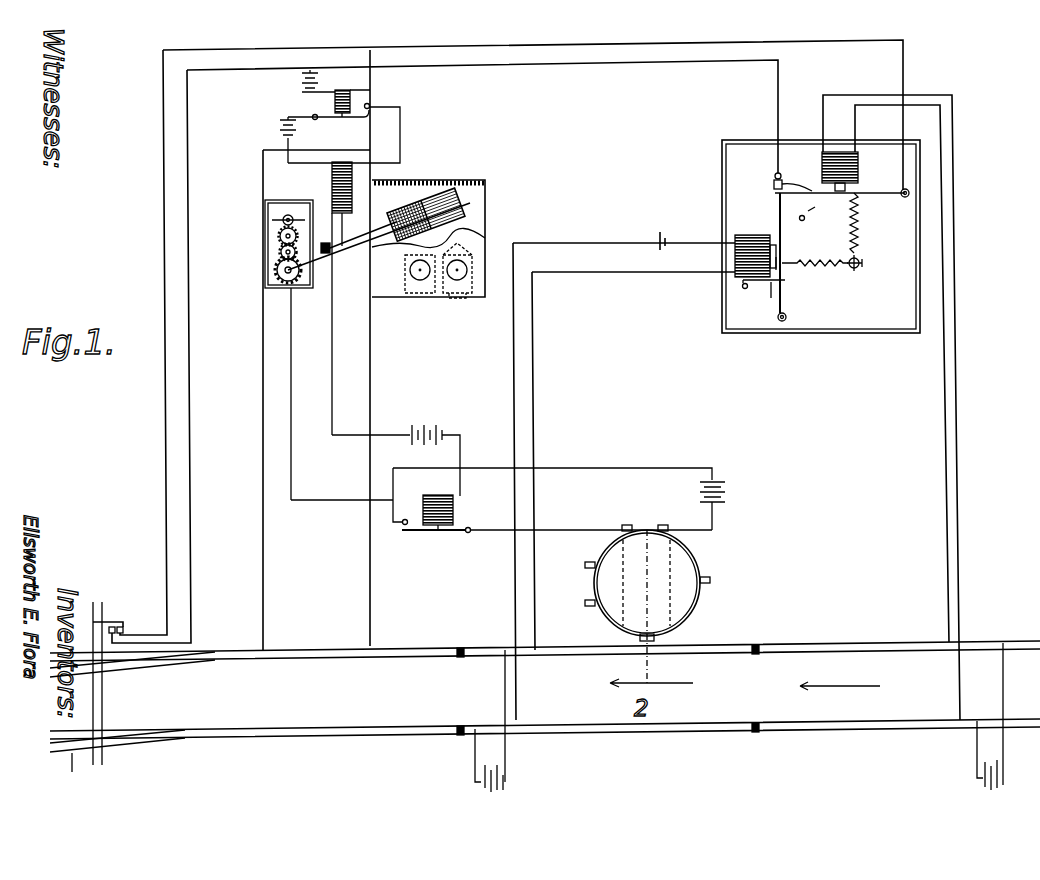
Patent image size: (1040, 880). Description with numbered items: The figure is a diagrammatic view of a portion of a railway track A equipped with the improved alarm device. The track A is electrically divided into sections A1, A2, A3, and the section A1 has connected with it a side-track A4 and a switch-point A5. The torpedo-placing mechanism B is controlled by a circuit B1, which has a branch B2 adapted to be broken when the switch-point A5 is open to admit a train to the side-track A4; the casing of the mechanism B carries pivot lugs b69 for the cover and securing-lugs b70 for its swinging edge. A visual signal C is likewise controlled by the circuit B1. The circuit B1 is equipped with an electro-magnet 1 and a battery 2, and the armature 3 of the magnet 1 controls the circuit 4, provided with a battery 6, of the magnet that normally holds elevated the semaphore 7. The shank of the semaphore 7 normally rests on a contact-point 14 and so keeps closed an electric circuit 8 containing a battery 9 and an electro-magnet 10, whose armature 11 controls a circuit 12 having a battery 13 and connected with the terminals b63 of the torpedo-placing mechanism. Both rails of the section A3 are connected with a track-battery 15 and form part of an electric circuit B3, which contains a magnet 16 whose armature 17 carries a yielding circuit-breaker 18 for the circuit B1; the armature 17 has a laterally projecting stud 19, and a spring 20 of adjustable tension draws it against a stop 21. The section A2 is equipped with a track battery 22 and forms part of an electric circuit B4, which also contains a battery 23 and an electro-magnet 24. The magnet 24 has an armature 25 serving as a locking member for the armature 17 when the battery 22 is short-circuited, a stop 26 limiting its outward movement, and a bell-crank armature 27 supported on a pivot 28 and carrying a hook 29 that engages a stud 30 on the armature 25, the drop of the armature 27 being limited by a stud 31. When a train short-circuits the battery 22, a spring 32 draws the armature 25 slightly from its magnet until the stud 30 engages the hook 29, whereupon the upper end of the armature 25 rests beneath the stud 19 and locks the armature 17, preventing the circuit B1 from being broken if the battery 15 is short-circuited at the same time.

The electro-magnet 1 is at (366, 96).
The battery 2 is at (302, 81).
The armature 3 is at (341, 125).
The circuit 4 is at (401, 133).
The battery 6 is at (280, 128).
The visual signal 7 is at (470, 204).
The electric circuit 8 is at (292, 458).
The battery 9 is at (396, 446).
The electro-magnet 10 is at (455, 512).
The armature 11 is at (415, 535).
The circuit 12 is at (552, 462).
The battery 13 is at (727, 490).
The contact-point 14 is at (320, 249).
The track-battery 15 is at (1007, 717).
The magnet 16 is at (859, 172).
The armature 17 is at (866, 197).
The circuit-breaker 18 is at (791, 185).
The stud 19 is at (774, 188).
The spring 20 is at (858, 243).
The stop 21 is at (827, 214).
The track battery 22 is at (509, 725).
The battery 23 is at (660, 232).
The electro-magnet 24 is at (735, 256).
The armature 25 is at (782, 247).
The stop 26 is at (803, 221).
The armature 27 is at (760, 291).
The pivot 28 is at (742, 283).
The hook 29 is at (786, 290).
The stud 30 is at (790, 272).
The stud 31 is at (771, 298).
The spring 32 is at (822, 257).
The railway track A is at (545, 675).
The track section A1 is at (296, 738).
The track section A2 is at (624, 735).
The track section A3 is at (880, 733).
The side-track A4 is at (81, 703).
The switch-point A5 is at (128, 728).
The torpedo-placing mechanism B is at (666, 608).
The circuit B1 is at (533, 333).
The branch B2 is at (142, 346).
The electric circuit B3 is at (906, 407).
The electric circuit B4 is at (541, 481).
The terminals b63 is at (663, 525).
The pivot lugs b69 is at (588, 602).
The securing-lugs b70 is at (708, 581).
The visual signal C is at (428, 225).